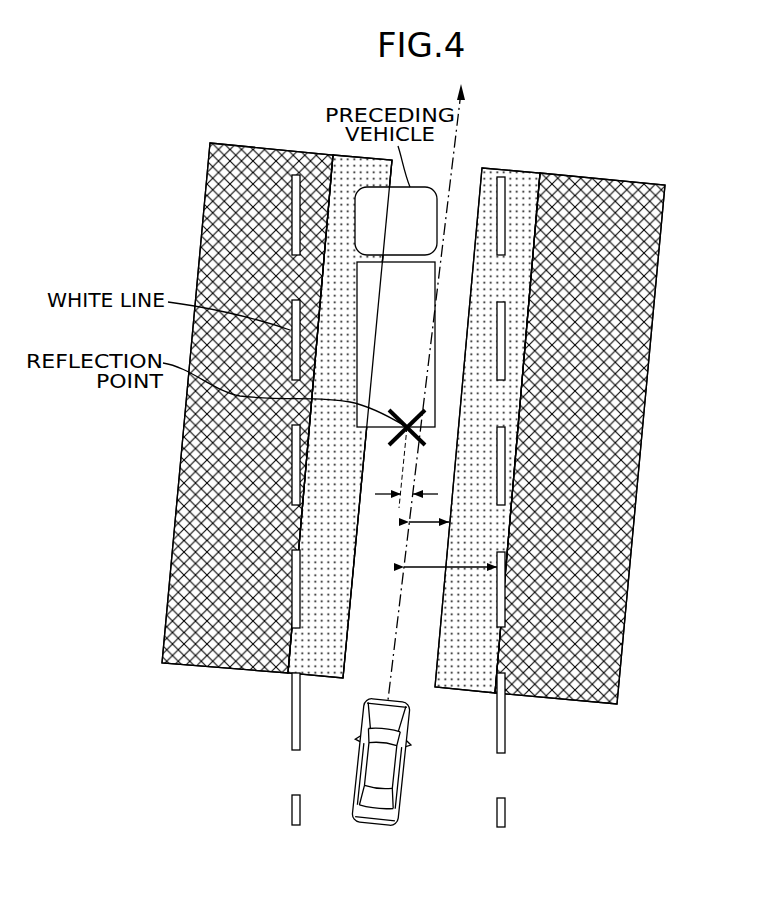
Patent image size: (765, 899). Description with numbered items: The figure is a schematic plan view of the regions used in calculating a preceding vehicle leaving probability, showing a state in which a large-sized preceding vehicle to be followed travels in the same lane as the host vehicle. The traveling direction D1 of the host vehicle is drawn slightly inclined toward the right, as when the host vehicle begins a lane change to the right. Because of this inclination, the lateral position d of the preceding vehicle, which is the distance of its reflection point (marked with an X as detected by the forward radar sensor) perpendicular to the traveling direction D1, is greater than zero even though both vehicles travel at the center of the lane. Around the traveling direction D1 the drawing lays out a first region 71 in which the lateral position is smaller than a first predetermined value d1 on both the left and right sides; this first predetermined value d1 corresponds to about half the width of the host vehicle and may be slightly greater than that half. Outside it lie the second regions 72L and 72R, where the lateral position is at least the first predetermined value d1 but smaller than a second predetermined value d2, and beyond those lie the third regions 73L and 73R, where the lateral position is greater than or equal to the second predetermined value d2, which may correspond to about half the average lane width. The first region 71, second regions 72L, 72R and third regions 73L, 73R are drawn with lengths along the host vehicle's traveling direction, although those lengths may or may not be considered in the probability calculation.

The first region 71 is at (388, 609).
The second region 72L is at (318, 667).
The second region 72R is at (467, 682).
The third region 73L is at (229, 664).
The third region 73R is at (557, 690).
The traveling direction D1 is at (458, 104).
The lateral position d is at (406, 511).
The first predetermined value d1 is at (429, 535).
The second predetermined value d2 is at (450, 581).